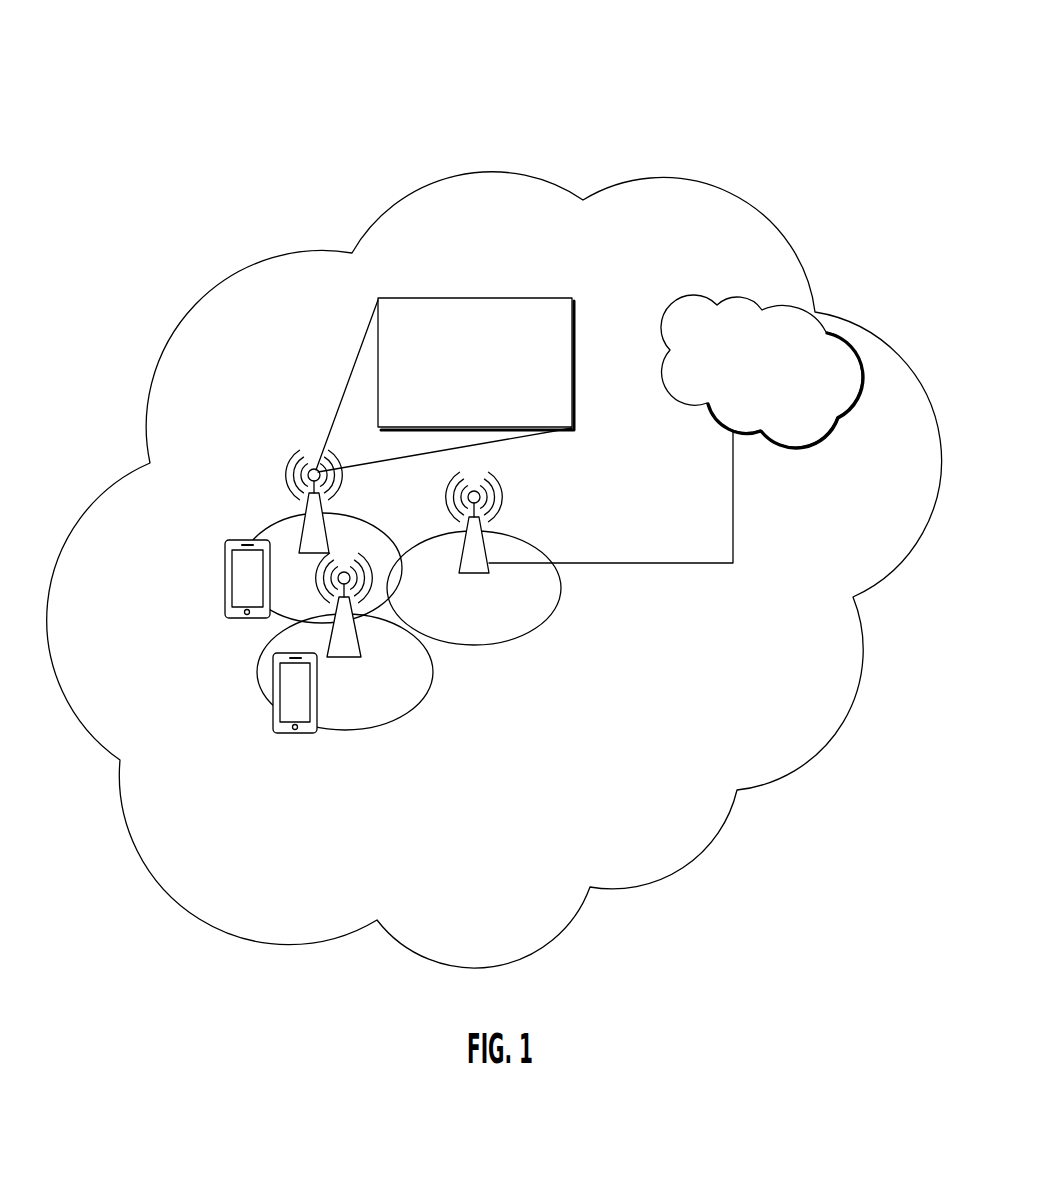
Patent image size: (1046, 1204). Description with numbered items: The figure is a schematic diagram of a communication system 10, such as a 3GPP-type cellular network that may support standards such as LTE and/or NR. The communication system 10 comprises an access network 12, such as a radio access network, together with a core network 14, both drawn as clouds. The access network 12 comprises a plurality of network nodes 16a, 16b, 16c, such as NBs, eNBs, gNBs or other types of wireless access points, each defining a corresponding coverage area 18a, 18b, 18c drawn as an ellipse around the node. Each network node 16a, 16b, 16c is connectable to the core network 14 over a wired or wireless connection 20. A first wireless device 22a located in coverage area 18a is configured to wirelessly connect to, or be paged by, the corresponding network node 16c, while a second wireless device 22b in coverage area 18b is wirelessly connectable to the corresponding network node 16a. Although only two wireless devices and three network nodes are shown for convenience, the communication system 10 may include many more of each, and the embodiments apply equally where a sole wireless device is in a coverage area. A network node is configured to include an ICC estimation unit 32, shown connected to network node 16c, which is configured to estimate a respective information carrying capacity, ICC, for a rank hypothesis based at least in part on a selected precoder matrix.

The communication system 10 is at (330, 68).
The access network 12 is at (537, 226).
The core network 14 is at (756, 374).
The network node 16a is at (353, 657).
The network node 16b is at (500, 494).
The network node 16c is at (283, 481).
The coverage area 18a is at (256, 532).
The coverage area 18b is at (433, 673).
The coverage area 18c is at (562, 590).
The connection 20 is at (734, 510).
The first wireless device 22a is at (230, 618).
The second wireless device 22b is at (292, 735).
The ICC estimation unit 32 is at (511, 397).